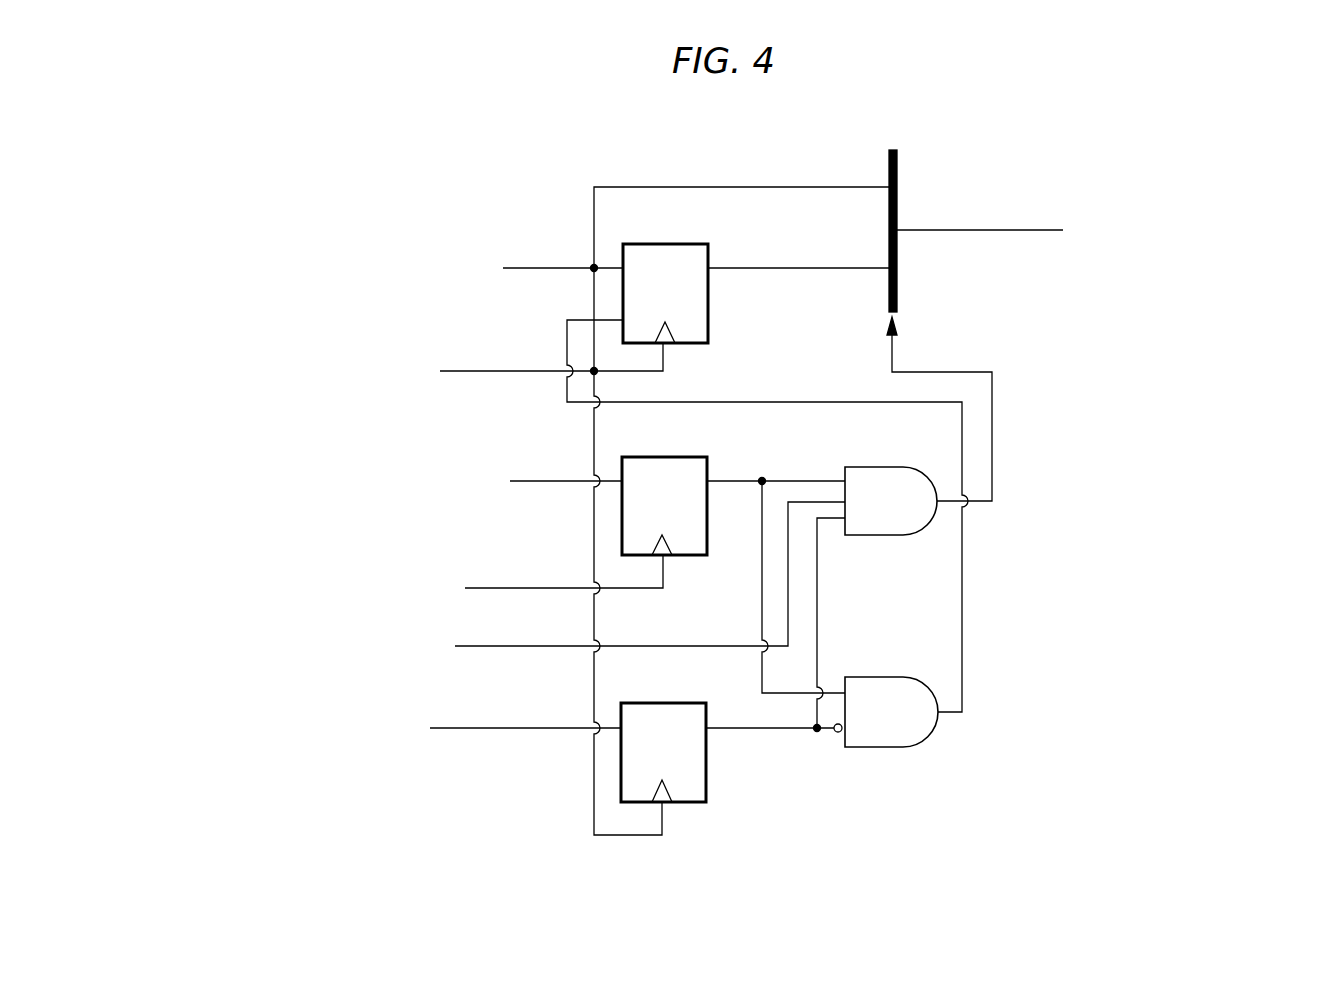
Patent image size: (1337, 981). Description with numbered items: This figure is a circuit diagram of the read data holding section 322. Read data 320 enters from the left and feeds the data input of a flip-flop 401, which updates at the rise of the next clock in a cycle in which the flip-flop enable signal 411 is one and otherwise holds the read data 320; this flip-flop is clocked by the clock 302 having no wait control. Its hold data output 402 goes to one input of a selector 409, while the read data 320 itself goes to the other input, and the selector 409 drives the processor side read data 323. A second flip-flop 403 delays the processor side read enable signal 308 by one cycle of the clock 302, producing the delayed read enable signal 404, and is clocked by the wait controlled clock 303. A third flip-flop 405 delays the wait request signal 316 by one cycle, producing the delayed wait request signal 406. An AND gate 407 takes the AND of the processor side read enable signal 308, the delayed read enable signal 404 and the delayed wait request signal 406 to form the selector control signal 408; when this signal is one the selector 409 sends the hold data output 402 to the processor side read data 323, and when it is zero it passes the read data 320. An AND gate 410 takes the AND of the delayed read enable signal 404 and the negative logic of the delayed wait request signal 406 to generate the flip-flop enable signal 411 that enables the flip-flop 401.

The read data holding section 322 is at (529, 167).
The read data 320 is at (508, 249).
The clock having no wait control 302 is at (395, 378).
The processor side read enable (RE) signal 308 is at (486, 577).
The wait controlled clock 303 is at (395, 579).
The wait request signal 316 is at (374, 726).
The processor side read data 323 is at (1103, 247).
The flip-flop 401 is at (689, 228).
The hold data output 402 is at (733, 268).
The flip-flop 403 is at (689, 441).
The processor side read enable signal delayed by one cycle 404 is at (733, 481).
The flip-flop 405 is at (688, 688).
The wait request signal delayed by one cycle 406 is at (733, 728).
The AND gate 407 is at (877, 466).
The selector control signal 408 is at (993, 438).
The selector 409 is at (898, 166).
The AND gate 410 is at (877, 677).
The flip-flop enable signal 411 is at (963, 605).